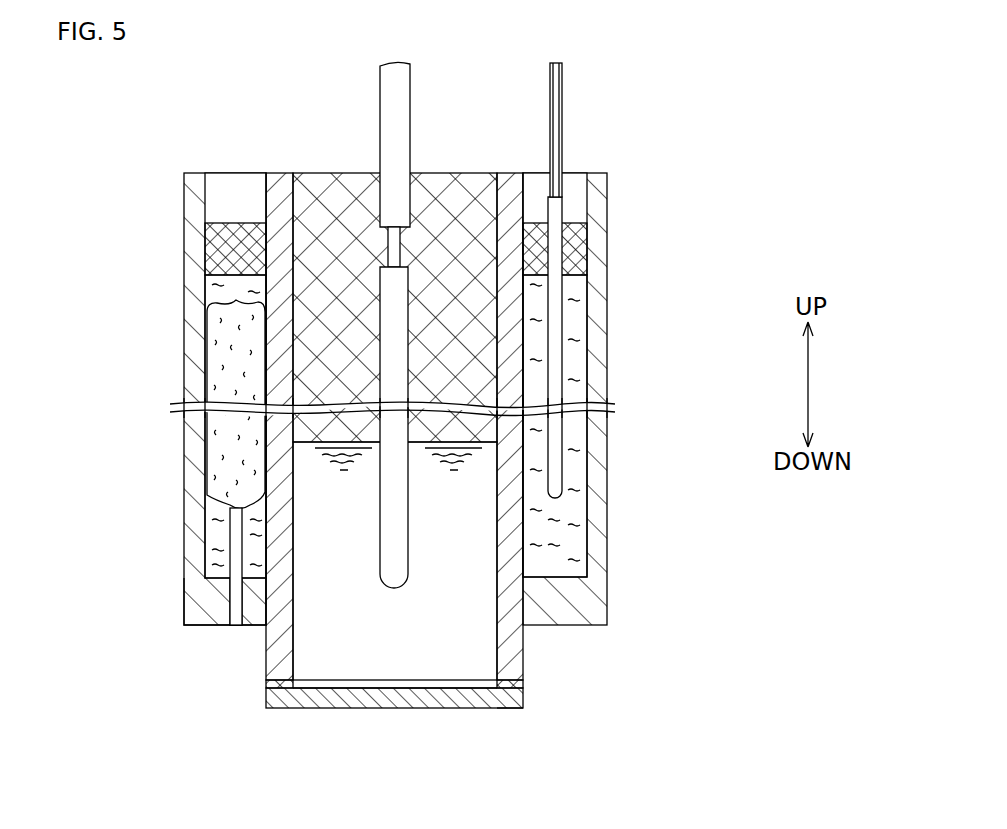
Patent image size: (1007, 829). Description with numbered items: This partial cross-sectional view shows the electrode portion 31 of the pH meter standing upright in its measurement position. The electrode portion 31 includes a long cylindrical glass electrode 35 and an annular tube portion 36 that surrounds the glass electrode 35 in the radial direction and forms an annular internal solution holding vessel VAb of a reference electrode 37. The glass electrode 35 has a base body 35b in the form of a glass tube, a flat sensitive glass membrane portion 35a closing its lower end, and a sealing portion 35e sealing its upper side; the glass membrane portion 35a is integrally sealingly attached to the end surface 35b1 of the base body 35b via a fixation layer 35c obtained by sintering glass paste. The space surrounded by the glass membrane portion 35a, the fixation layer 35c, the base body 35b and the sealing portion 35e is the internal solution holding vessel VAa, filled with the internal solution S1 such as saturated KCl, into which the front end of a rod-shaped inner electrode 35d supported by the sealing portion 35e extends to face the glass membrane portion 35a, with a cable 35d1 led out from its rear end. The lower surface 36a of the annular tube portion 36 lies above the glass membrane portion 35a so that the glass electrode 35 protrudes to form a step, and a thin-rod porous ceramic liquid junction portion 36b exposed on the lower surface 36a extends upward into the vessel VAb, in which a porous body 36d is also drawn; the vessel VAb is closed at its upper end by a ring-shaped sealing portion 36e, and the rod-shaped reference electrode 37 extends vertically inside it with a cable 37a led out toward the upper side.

The electrode portion 31 is at (664, 195).
The glass electrode 35 is at (414, 429).
The glass membrane portion 35a is at (372, 708).
The base body 35b is at (266, 672).
The end surface 35b1 is at (508, 708).
The fixation layer 35c is at (525, 686).
The inner electrode 35d is at (380, 582).
The cable 35d1 is at (385, 118).
The sealing portion 35e is at (450, 185).
The annular tube portion 36 is at (410, 414).
The lower surface 36a is at (200, 628).
The liquid junction portion 36b is at (235, 628).
The porous body 36d is at (206, 446).
The sealing portion 36e is at (233, 222).
The reference electrode 37 is at (609, 280).
The cable 37a is at (563, 92).
The internal solution holding vessel VAa is at (470, 652).
The internal solution holding vessel VAb is at (206, 544).
The internal solution S1 is at (428, 684).